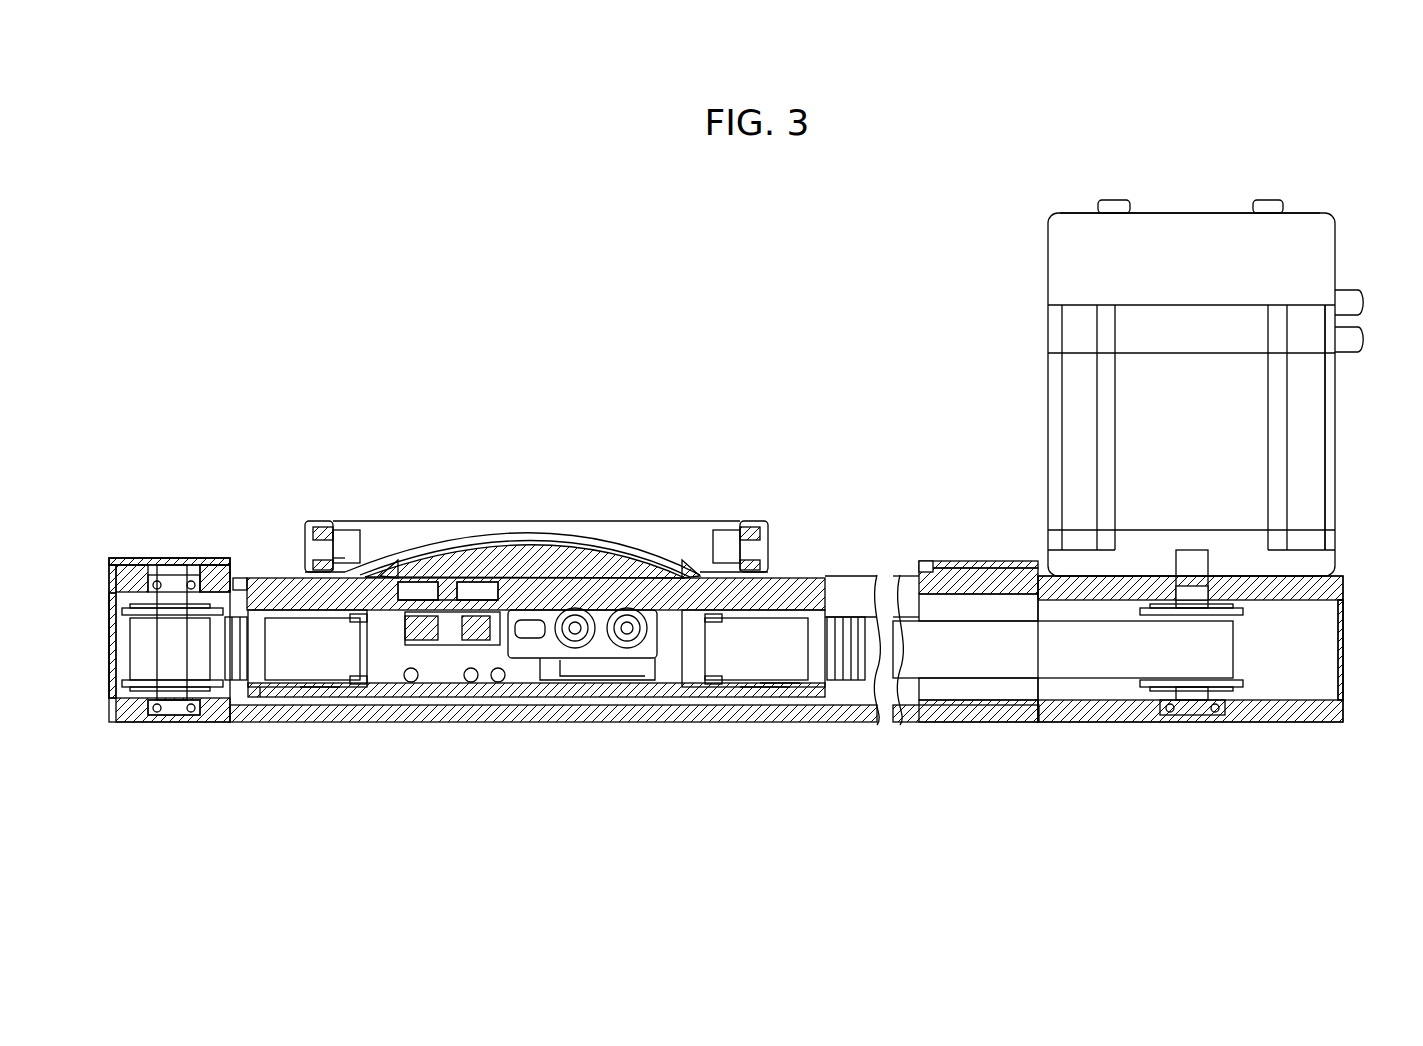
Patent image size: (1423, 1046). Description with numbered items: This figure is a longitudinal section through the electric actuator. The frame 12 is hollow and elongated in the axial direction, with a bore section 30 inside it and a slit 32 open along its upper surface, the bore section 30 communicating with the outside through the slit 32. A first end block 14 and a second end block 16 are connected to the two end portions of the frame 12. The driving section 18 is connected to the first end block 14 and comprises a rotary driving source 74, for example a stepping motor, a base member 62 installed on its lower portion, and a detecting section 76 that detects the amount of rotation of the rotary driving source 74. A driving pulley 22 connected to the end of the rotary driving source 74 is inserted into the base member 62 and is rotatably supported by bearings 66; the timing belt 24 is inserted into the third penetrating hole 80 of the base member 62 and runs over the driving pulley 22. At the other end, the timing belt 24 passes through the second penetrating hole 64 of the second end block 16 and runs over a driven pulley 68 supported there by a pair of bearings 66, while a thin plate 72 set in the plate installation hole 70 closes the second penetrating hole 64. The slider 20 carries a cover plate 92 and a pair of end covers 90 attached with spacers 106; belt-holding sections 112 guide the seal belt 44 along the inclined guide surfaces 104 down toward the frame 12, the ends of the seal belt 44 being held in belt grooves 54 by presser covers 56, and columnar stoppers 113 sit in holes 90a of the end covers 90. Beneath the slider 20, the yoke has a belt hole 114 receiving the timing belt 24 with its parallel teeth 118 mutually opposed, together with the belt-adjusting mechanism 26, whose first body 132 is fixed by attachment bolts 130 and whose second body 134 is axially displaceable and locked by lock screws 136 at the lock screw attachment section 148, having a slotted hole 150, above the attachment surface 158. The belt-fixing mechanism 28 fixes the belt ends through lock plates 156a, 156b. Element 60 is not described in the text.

The second end block 16 is at (125, 722).
The bearings 66 is at (195, 722).
The driven pulley 68 is at (150, 600).
The second penetrating hole 64 is at (125, 683).
The plate installation hole 70 is at (110, 593).
The plate 72 is at (110, 635).
The frame 12 is at (707, 722).
The belt-adjusting mechanism 26 is at (440, 697).
The parallel teeth 118 is at (238, 640).
The belt-fixing mechanism 28 is at (293, 635).
The bore section 30 is at (285, 690).
The lock plate 156a is at (318, 690).
The attachment surface 158 is at (775, 690).
The lock plate 156b is at (770, 690).
The cover plate 92 is at (416, 530).
The seal belt 44 is at (535, 535).
The slider 20 is at (640, 521).
The end covers 90 is at (318, 521).
The holes 90a is at (315, 530).
The spacers 106 is at (345, 545).
The belt-holding sections 112 is at (390, 570).
The stoppers 113 is at (310, 560).
The guide surfaces 104 is at (475, 580).
The attachment bolts 130 is at (480, 585).
The slotted hole 150 is at (548, 628).
The lock screw attachment section 148 is at (530, 660).
The lock screws 136 is at (625, 648).
The second body 134 is at (648, 683).
The belt hole 114 is at (382, 660).
The first body 132 is at (492, 683).
The slit 32 is at (855, 595).
The first end block 14 is at (965, 722).
The belt grooves 54 is at (215, 565).
The presser covers 56 is at (175, 558).
The lower block 60 is at (1005, 700).
The timing belt 24 is at (1105, 660).
The driving pulley 22 is at (1235, 615).
The base member 62 is at (1240, 722).
The third penetrating hole 80 is at (1300, 695).
The driving section 18 is at (1325, 212).
The detecting section 76 is at (1175, 215).
The rotary driving source 74 is at (1325, 430).